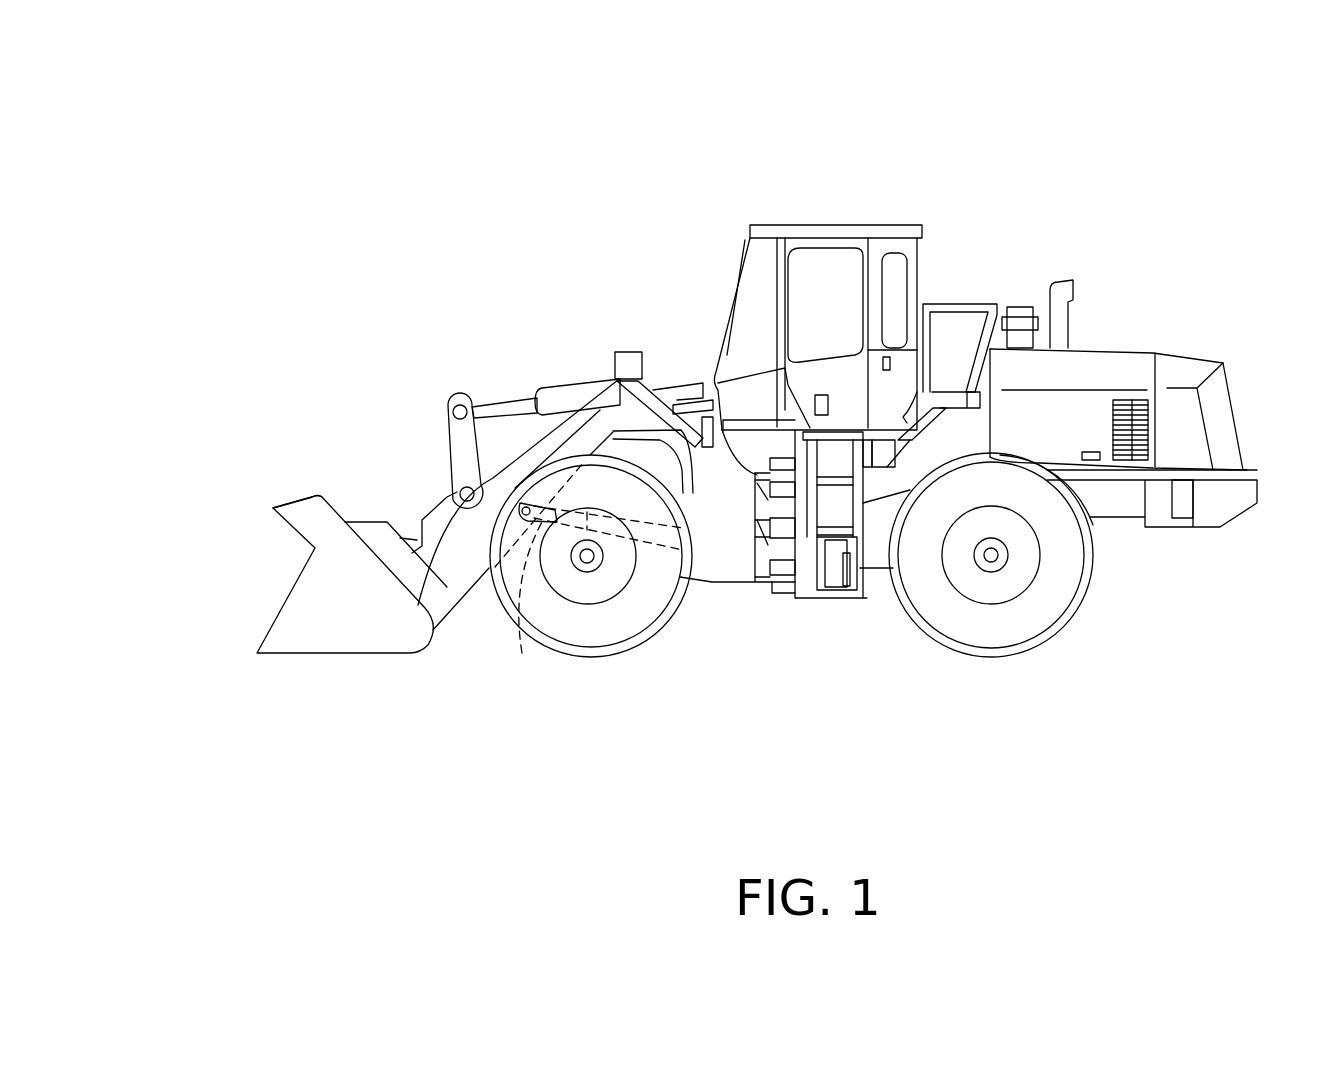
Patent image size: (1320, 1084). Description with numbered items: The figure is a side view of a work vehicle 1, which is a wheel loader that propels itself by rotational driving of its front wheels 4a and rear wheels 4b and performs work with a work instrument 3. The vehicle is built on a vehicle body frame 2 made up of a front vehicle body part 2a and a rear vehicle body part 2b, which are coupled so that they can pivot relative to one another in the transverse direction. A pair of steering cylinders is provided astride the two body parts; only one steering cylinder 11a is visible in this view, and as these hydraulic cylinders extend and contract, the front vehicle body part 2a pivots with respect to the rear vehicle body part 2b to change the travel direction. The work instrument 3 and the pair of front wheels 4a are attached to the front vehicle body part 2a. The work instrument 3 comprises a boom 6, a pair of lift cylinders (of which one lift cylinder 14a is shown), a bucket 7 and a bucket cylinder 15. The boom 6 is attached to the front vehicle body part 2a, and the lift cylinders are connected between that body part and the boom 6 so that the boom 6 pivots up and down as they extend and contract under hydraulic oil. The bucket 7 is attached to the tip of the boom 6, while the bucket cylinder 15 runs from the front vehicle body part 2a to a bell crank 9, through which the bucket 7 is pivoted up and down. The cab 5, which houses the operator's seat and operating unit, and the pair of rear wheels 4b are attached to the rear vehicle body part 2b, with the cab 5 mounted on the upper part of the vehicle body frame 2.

The work vehicle 1 is at (1052, 135).
The vehicle body frame 2 is at (820, 612).
The front vehicle body part 2a is at (714, 572).
The rear vehicle body part 2b is at (873, 585).
The work instrument 3 is at (296, 531).
The front wheels 4a is at (600, 637).
The rear wheels 4b is at (1003, 637).
The cab 5 is at (884, 225).
The boom 6 is at (495, 490).
The bucket 7 is at (313, 506).
The bell crank 9 is at (453, 468).
The steering cylinder 11a is at (780, 592).
The lift cylinder 14a is at (527, 643).
The bucket cylinder 15 is at (545, 380).